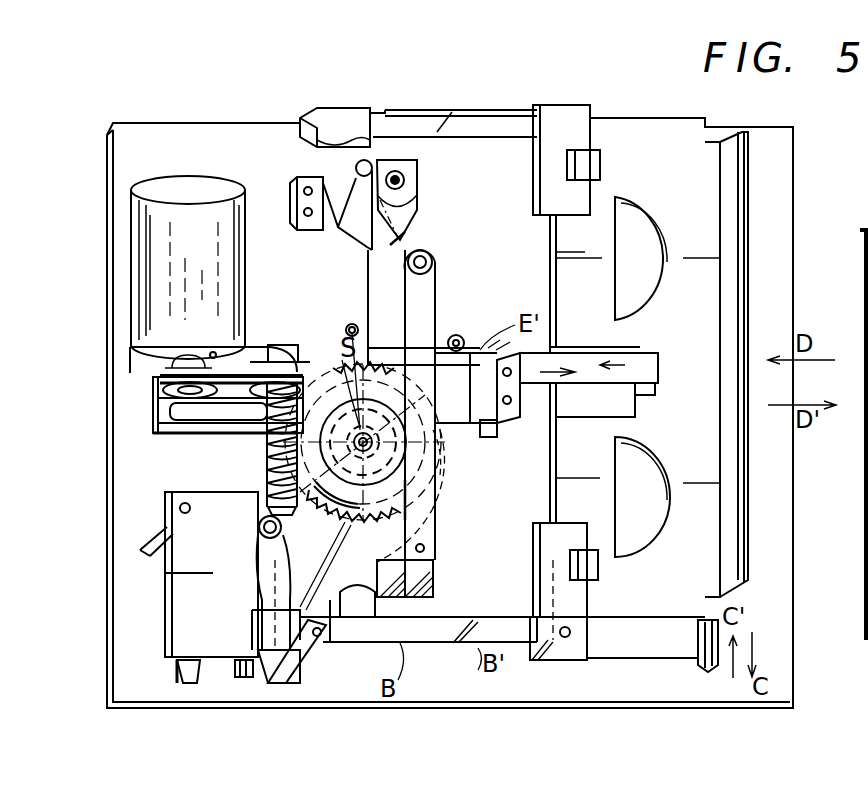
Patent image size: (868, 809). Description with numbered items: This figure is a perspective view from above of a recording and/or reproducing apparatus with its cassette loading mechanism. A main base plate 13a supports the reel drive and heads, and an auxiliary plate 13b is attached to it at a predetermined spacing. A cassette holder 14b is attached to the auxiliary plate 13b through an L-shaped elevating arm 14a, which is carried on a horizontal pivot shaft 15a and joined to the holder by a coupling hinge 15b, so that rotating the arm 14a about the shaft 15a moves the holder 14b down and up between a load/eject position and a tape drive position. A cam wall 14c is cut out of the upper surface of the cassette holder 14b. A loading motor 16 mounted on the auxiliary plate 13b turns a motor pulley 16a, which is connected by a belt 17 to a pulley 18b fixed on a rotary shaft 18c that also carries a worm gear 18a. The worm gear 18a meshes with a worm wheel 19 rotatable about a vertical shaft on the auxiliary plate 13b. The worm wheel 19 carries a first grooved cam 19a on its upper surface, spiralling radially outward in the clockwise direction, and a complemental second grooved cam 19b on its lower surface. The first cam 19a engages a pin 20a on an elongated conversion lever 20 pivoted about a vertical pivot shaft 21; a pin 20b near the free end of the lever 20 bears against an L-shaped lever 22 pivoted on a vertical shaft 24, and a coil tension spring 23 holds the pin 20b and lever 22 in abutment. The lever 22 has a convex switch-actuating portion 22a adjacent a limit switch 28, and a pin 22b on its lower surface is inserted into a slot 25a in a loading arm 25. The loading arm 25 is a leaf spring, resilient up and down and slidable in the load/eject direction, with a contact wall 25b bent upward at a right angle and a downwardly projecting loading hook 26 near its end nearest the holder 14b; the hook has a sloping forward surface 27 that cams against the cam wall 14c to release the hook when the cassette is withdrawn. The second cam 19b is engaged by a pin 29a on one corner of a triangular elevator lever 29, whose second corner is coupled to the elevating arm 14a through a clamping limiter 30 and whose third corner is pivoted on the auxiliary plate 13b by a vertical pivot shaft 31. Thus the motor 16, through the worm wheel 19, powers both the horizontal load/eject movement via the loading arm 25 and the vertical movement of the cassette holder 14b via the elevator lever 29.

The main base plate 13a is at (135, 487).
The auxiliary plate 13b is at (180, 595).
The elevating arm 14a is at (432, 645).
The cassette holder 14b is at (633, 650).
The cam wall 14c is at (638, 402).
The horizontal pivot shaft 15a is at (318, 638).
The coupling hinge 15b is at (560, 655).
The loading motor 16 is at (150, 256).
The motor pulley 16a is at (160, 408).
The belt 17 is at (168, 382).
The worm gear 18a is at (262, 456).
The pulley 18b is at (268, 345).
The rotary shaft 18c is at (268, 507).
The worm wheel 19 is at (337, 400).
The first grooved cam 19a is at (350, 325).
The second grooved cam 19b is at (339, 569).
The conversion lever 20 is at (425, 528).
The pin 20a is at (449, 500).
The pin 20b is at (432, 265).
The vertical pivot shaft 21 is at (425, 550).
The lever 22 is at (410, 213).
The switch-actuating portion 22a is at (360, 248).
The pin 22b is at (460, 335).
The coil tension spring 23 is at (405, 240).
The vertical shaft 24 is at (406, 180).
The loading arm 25 is at (490, 432).
The slot 25a is at (505, 355).
The contact wall 25b is at (500, 426).
The loading hook 26 is at (625, 398).
The forward surface 27 is at (645, 388).
The limit switch 28 is at (312, 228).
The elevator lever 29 is at (265, 609).
The pin 29a is at (422, 400).
The limiter 30 is at (240, 688).
The vertical pivot shaft 31 is at (260, 532).